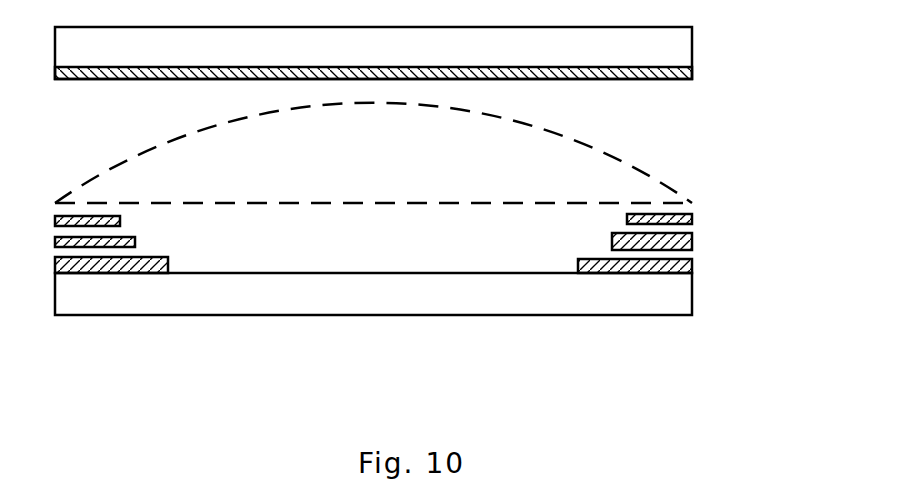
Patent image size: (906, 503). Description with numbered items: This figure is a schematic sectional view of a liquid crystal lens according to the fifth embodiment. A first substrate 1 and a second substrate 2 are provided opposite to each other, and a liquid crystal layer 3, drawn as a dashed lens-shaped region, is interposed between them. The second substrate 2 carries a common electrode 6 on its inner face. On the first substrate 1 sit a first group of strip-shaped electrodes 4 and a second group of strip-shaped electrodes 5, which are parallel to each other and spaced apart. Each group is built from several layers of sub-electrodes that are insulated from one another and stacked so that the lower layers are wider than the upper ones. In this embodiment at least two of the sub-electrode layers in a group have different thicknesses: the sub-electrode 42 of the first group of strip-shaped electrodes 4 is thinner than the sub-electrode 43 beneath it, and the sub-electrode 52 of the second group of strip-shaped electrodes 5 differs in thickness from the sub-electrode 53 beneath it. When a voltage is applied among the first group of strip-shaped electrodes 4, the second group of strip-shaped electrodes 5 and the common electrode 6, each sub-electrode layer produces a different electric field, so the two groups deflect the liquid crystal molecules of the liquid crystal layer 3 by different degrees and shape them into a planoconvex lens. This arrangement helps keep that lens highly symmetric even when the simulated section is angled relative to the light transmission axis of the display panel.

The first substrate 1 is at (692, 293).
The second substrate 2 is at (433, 56).
The liquid crystal layer 3 is at (665, 150).
The first group of strip-shaped electrodes 4 is at (138, 293).
The second group of strip-shaped electrodes 5 is at (608, 292).
The common electrode 6 is at (692, 69).
The sub-electrode of the first group of strip-shaped electrodes 42 is at (135, 241).
The sub-electrode of the first group of strip-shaped electrodes 43 is at (138, 273).
The sub-electrode of the second group of strip-shaped electrodes 52 is at (612, 242).
The sub-electrode of the second group of strip-shaped electrodes 53 is at (605, 273).